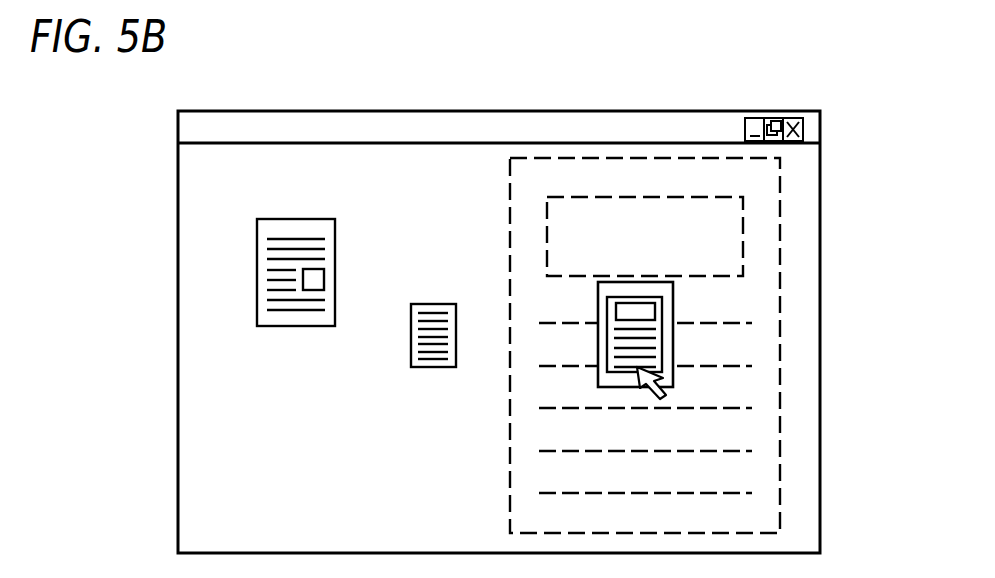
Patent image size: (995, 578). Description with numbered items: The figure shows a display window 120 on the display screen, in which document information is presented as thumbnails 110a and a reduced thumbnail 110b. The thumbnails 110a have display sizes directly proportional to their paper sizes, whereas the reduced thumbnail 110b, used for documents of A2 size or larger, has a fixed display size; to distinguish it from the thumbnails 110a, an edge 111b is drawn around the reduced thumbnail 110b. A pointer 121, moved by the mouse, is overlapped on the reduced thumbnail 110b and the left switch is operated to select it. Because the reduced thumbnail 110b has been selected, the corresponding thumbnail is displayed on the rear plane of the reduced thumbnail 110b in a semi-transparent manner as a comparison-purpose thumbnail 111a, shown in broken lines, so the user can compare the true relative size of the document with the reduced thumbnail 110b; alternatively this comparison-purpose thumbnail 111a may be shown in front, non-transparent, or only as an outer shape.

The display window 120 is at (820, 188).
The comparison-purpose thumbnail 111a is at (780, 262).
The edge 111b is at (673, 306).
The thumbnail 110a is at (303, 219).
The reduced thumbnail 110b is at (673, 349).
The pointer 121 is at (663, 395).